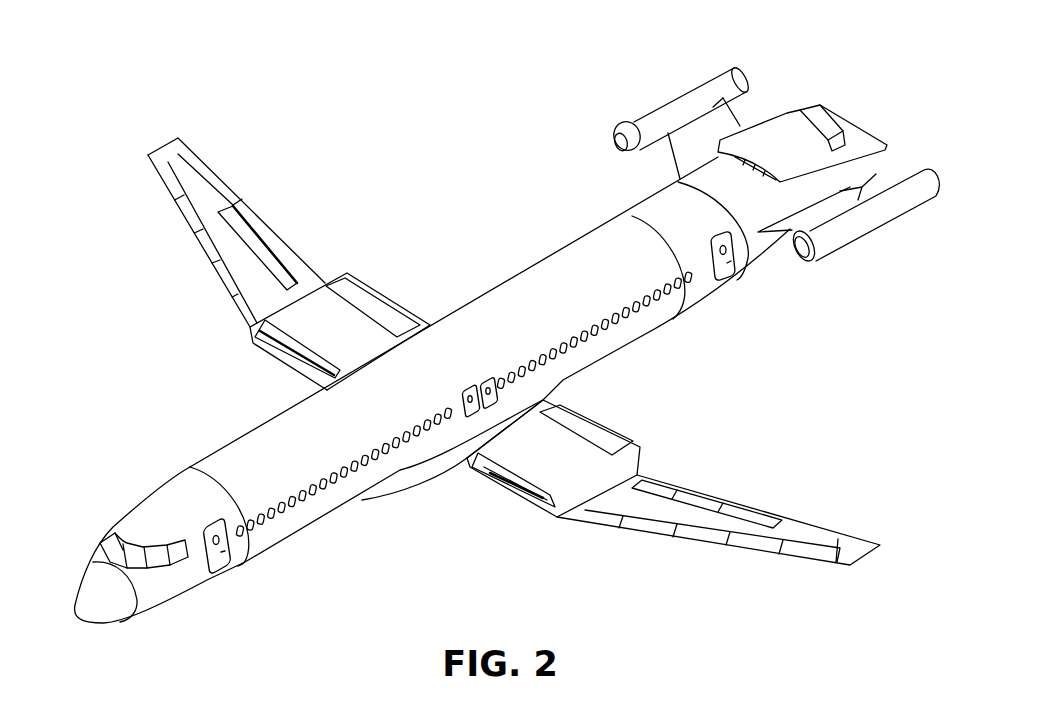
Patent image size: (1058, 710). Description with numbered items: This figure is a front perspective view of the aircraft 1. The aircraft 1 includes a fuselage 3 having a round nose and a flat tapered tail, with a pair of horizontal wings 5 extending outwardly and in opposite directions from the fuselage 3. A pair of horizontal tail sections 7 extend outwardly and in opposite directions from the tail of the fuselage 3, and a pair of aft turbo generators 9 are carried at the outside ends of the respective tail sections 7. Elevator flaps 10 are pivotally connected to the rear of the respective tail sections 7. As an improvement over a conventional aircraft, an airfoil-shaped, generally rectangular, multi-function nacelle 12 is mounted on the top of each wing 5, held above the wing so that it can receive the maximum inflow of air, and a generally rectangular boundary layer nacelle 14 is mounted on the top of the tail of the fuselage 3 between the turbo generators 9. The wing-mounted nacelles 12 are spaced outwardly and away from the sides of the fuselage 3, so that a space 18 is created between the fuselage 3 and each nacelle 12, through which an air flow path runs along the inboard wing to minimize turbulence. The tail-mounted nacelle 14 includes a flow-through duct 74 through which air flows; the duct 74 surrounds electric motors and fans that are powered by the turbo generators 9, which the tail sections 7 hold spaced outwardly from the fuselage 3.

The aircraft 1 is at (437, 277).
The fuselage 3 is at (648, 320).
The horizontal wings 5 is at (183, 218).
The horizontal tail sections 7 is at (668, 158).
The aft turbo generators 9 is at (678, 93).
The elevator flaps 10 is at (733, 117).
The multi-function nacelle 12 is at (266, 374).
The boundary layer nacelle 14 is at (825, 115).
The space 18 is at (455, 467).
The flow-through duct 74 is at (813, 150).